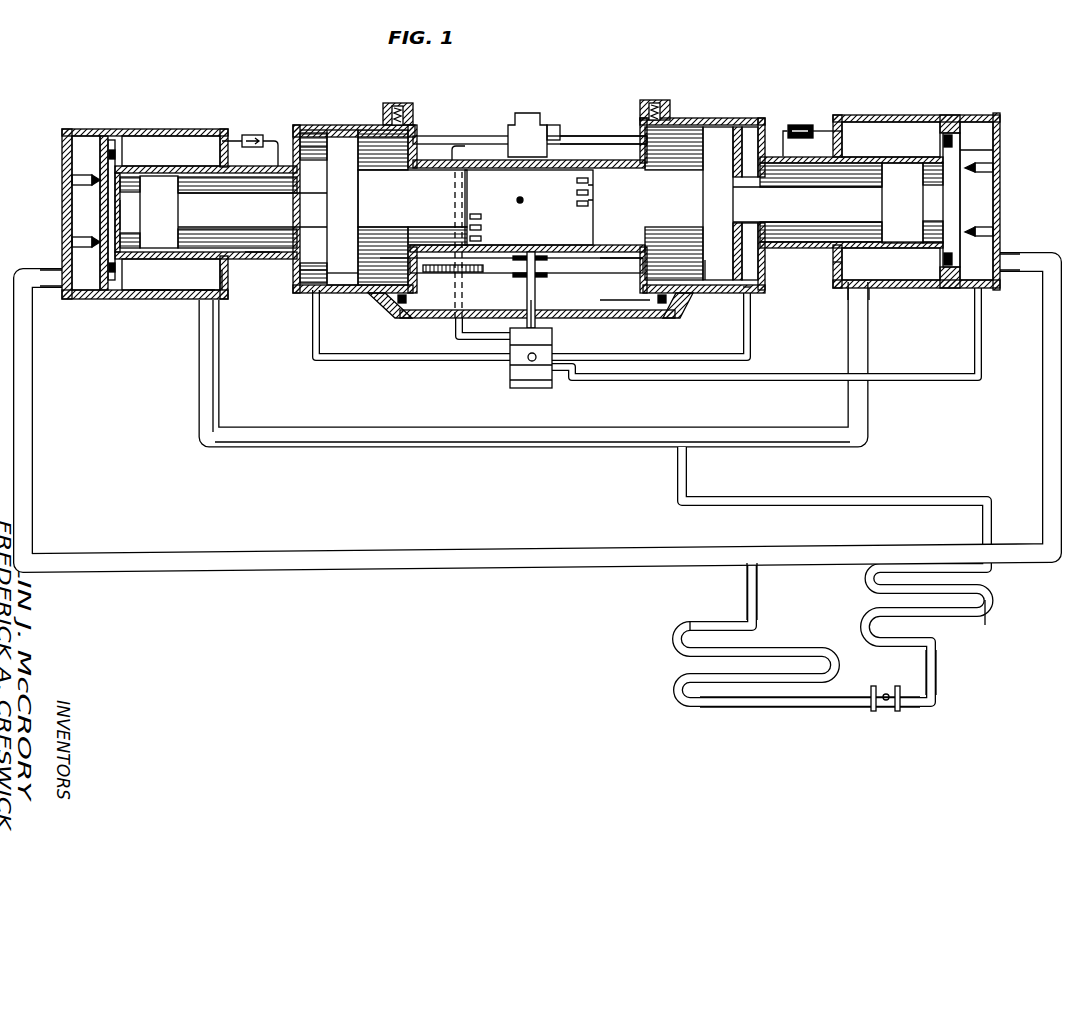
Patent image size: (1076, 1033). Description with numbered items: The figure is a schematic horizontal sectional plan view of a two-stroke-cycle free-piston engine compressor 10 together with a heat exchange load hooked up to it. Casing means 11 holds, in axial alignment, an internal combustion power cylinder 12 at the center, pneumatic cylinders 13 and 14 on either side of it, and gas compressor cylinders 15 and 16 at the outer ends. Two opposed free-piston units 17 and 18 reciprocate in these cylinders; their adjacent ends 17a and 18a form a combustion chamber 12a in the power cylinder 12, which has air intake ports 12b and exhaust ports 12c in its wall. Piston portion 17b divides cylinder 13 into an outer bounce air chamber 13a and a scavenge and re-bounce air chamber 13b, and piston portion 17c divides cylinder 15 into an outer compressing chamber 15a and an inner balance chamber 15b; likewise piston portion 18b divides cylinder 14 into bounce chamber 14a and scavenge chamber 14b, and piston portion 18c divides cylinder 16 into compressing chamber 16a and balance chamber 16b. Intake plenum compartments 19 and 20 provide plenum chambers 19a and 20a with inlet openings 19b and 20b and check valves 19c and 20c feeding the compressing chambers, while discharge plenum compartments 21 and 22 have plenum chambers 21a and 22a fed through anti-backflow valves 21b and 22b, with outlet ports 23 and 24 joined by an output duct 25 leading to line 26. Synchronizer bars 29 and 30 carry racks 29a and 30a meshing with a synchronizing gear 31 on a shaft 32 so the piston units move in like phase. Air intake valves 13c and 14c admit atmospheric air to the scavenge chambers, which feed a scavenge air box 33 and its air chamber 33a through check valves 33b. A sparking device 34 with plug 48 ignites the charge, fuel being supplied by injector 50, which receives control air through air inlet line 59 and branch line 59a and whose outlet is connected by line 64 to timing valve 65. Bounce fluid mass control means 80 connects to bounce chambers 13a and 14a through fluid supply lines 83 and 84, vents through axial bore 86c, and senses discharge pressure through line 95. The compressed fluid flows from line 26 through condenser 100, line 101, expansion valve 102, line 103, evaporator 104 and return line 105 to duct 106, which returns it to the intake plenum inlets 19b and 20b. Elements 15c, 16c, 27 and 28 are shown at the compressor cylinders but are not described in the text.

The two-stroke-cycle free-piston engine compressor 10 is at (547, 87).
The casing means 11 is at (315, 125).
The internal combustion power cylinder 12 is at (453, 190).
The combustion chamber 12a is at (577, 192).
The air intake ports 12b is at (479, 218).
The exhaust ports 12c is at (590, 200).
The pneumatic cylinder 13 is at (715, 135).
The outer bounce air chamber 13a is at (780, 122).
The scavenge and re-bounce air chamber 13b is at (668, 138).
The air intake valve 13c is at (665, 92).
The pneumatic cylinder 14 is at (395, 103).
The outer bounce air chamber 14a is at (313, 147).
The scavenge re-bounce air chamber 14b is at (328, 270).
The air intake valve 14c is at (409, 103).
The gas compressor cylinder 15 is at (845, 155).
The outer compressing chamber 15a is at (965, 152).
The inner balance chamber 15b is at (860, 158).
The check valve 15c is at (808, 122).
The gas compressor cylinder 16 is at (197, 164).
The outer compressing chamber 16a is at (122, 235).
The inner balance chamber 16b is at (262, 237).
The check valve 16c is at (256, 134).
The free-piston unit 17 is at (807, 204).
The adjacent end 17a is at (600, 158).
The piston portion 17b is at (722, 274).
The piston portion 17c is at (903, 222).
The free-piston unit 18 is at (230, 200).
The adjacent end 18a is at (432, 160).
The piston portion 18b is at (333, 274).
The piston portion 18c is at (163, 237).
The annular intake plenum compartment 19 is at (840, 270).
The annular plenum chamber 19a is at (903, 265).
The inlet opening 19b is at (856, 284).
The one-way check valve 19c is at (947, 134).
The annular intake plenum compartment 20 is at (147, 292).
The annular plenum chamber 20a is at (221, 282).
The inlet opening 20b is at (205, 292).
The one-way check valve 20c is at (112, 149).
The discharge plenum compartment 21 is at (1000, 137).
The discharge plenum chamber 21a is at (972, 135).
The pressure-responsive anti-backflow valve 21b is at (967, 231).
The discharge plenum compartment 22 is at (62, 158).
The discharge plenum chamber 22a is at (78, 142).
The pressure-responsive anti-backflow valve 22b is at (92, 243).
The outlet port 23 is at (1010, 256).
The outlet port 24 is at (66, 281).
The output duct 25 is at (305, 573).
The line 26 is at (747, 582).
The conduit 27 is at (823, 130).
The conduit 28 is at (279, 138).
The synchronizer bar 29 is at (627, 265).
The rack 29a is at (503, 273).
The synchronizer bar 30 is at (387, 265).
The rack 30a is at (437, 277).
The synchronizing gear 31 is at (538, 250).
The shaft 32 is at (536, 283).
The scavenge air box 33 is at (565, 318).
The scavenge air chamber 33a is at (625, 302).
The one-way check valve 33b is at (393, 300).
The sparking device 34 is at (545, 388).
The plug 48 is at (521, 203).
The injector 50 is at (500, 122).
The air inlet line 59 is at (620, 136).
The branch line 59a is at (565, 120).
The line 64 is at (455, 331).
The timing valve 65 is at (551, 327).
The bounce fluid mass control means 80 is at (511, 358).
The fluid supply line 83 is at (312, 361).
The fluid supply line 84 is at (748, 288).
The axial bore 86c is at (530, 361).
The line 95 is at (580, 381).
The condenser 100 is at (684, 642).
The line 101 is at (783, 708).
The expansion valve 102 is at (887, 711).
The line 103 is at (937, 668).
The evaporator 104 is at (988, 615).
The return line 105 is at (848, 497).
The duct 106 is at (540, 447).